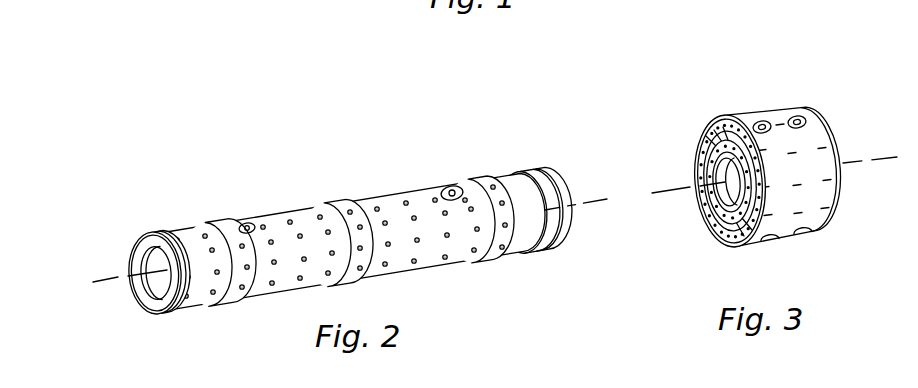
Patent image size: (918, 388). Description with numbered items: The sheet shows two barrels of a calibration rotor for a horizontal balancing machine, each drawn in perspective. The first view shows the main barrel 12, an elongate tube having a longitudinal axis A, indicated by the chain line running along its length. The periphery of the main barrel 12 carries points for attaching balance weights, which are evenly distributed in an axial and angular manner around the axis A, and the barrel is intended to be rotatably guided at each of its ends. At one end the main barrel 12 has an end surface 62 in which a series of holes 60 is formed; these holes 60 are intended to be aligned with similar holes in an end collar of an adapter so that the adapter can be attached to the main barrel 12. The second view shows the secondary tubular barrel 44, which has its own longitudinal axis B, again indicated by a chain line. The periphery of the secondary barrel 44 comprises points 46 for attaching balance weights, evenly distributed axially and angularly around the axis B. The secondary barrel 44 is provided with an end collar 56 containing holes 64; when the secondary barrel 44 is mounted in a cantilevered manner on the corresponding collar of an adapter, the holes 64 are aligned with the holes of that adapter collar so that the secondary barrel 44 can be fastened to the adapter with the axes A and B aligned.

In FIG. 2, the main barrel 12 is at (397, 258).
In FIG. 2, the holes 60 is at (142, 305).
In FIG. 2, the end surface 62 is at (153, 313).
In FIG. 2, the longitudinal axis A is at (589, 200).
In FIG. 3, the secondary tubular barrel 44 is at (773, 110).
In FIG. 3, the points for attaching balance weights 46 is at (803, 117).
In FIG. 3, the collar 56 is at (712, 203).
In FIG. 3, the holes 64 is at (722, 237).
In FIG. 3, the longitudinal axis B is at (866, 160).